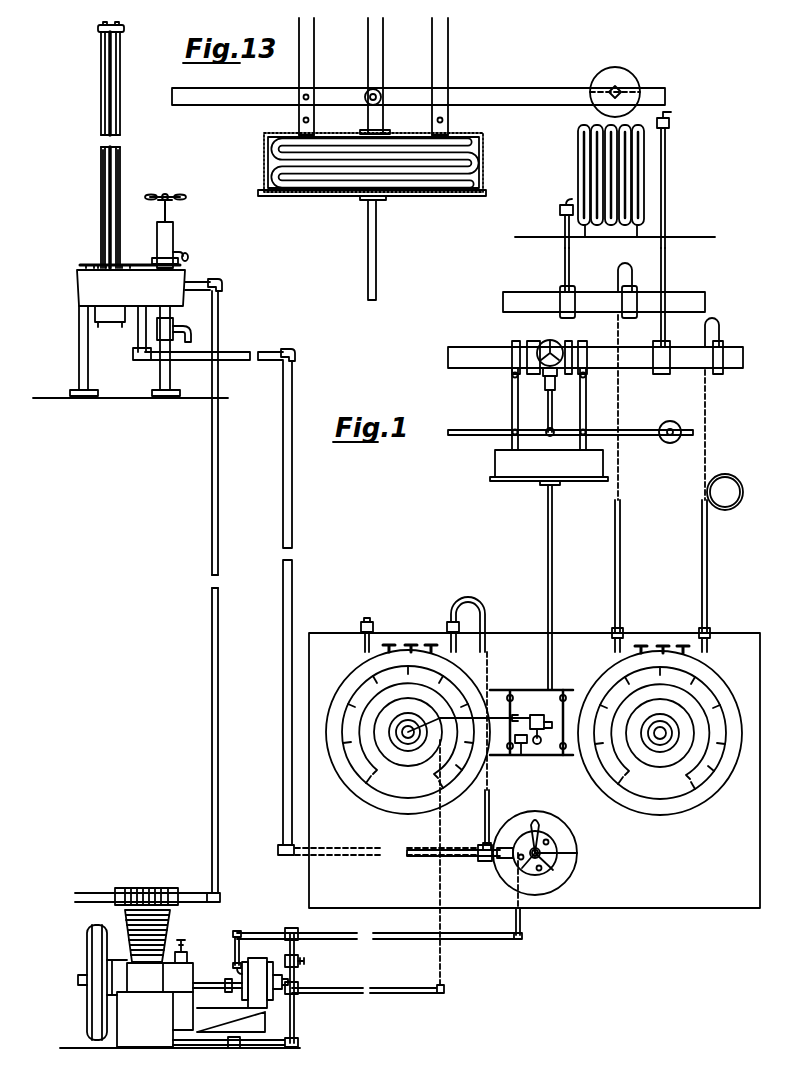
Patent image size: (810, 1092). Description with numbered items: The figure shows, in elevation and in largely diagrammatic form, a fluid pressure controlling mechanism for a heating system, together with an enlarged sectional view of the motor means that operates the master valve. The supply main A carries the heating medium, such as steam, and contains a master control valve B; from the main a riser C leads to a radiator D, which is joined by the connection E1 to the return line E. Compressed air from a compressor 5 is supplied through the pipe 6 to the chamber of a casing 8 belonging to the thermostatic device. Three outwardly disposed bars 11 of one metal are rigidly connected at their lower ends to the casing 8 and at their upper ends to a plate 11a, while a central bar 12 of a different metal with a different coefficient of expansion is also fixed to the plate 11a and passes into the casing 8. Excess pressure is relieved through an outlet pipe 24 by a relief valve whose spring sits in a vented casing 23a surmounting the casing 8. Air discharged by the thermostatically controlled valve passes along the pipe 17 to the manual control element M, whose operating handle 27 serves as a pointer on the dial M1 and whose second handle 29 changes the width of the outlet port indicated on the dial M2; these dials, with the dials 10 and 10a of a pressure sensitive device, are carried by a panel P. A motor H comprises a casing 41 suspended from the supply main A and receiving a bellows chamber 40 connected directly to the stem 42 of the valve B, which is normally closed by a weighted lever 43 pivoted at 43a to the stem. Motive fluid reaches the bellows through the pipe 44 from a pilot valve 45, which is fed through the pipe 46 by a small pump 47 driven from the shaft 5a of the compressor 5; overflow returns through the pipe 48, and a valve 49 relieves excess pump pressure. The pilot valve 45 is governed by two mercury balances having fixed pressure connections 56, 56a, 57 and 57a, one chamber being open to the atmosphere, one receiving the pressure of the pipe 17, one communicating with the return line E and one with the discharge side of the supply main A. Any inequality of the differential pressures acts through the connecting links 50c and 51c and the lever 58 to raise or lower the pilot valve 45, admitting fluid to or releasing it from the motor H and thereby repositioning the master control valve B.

In FIG. 1, the compressor 5 is at (180, 968).
In FIG. 1, the shaft 5a is at (220, 983).
In FIG. 1, the pipe 6 is at (218, 305).
In FIG. 1, the casing 8 is at (130, 331).
In FIG. 1, the dial 10 is at (352, 678).
In FIG. 1, the dial 10a is at (712, 684).
In FIG. 1, the bars 11 is at (101, 115).
In FIG. 1, the plate 11a is at (98, 28).
In FIG. 1, the bar 12 is at (112, 170).
In FIG. 1, the pipe 17 is at (311, 602).
In FIG. 1, the vented casing 23a is at (173, 236).
In FIG. 1, the outlet pipe 24 is at (177, 324).
In FIG. 1, the operating handle 27 is at (570, 838).
In FIG. 1, the second handle 29 is at (524, 868).
In FIG. 13, the bellows chamber 40 is at (483, 158).
In FIG. 13, the casing 41 is at (264, 158).
In FIG. 1, the casing 41 is at (549, 465).
In FIG. 13, the stem 42 is at (383, 55).
In FIG. 1, the stem 42 is at (512, 372).
In FIG. 13, the weighted lever 43 is at (530, 90).
In FIG. 1, the weighted lever 43 is at (636, 428).
In FIG. 13, the pivotal connection 43a is at (366, 91).
In FIG. 1, the pivotal connection 43a is at (546, 431).
In FIG. 13, the pipe 44 is at (376, 226).
In FIG. 1, the pipe 44 is at (548, 608).
In FIG. 1, the pilot valve 45 is at (540, 745).
In FIG. 1, the pipe 46 is at (377, 913).
In FIG. 1, the pump 47 is at (255, 964).
In FIG. 1, the pipe 48 is at (441, 884).
In FIG. 1, the valve 49 is at (306, 962).
In FIG. 1, the connecting link 50c is at (522, 690).
In FIG. 1, the connecting link 51c is at (563, 690).
In FIG. 1, the pressure connection 56 is at (370, 640).
In FIG. 1, the pipe 56a is at (483, 818).
In FIG. 1, the pipe 57 is at (615, 594).
In FIG. 1, the pipe 57a is at (717, 511).
In FIG. 1, the lever 58 is at (522, 755).
In FIG. 1, the supply main A is at (595, 357).
In FIG. 1, the master control valve B is at (548, 375).
In FIG. 1, the riser C is at (665, 278).
In FIG. 1, the radiator D is at (578, 185).
In FIG. 1, the return line E is at (604, 302).
In FIG. 1, the connection E1 is at (569, 262).
In FIG. 13, the motor H is at (342, 115).
In FIG. 1, the motor H is at (480, 466).
In FIG. 1, the manual control element M is at (552, 870).
In FIG. 1, the dial M1 is at (577, 853).
In FIG. 1, the dial M2 is at (537, 840).
In FIG. 1, the panel P is at (534, 770).